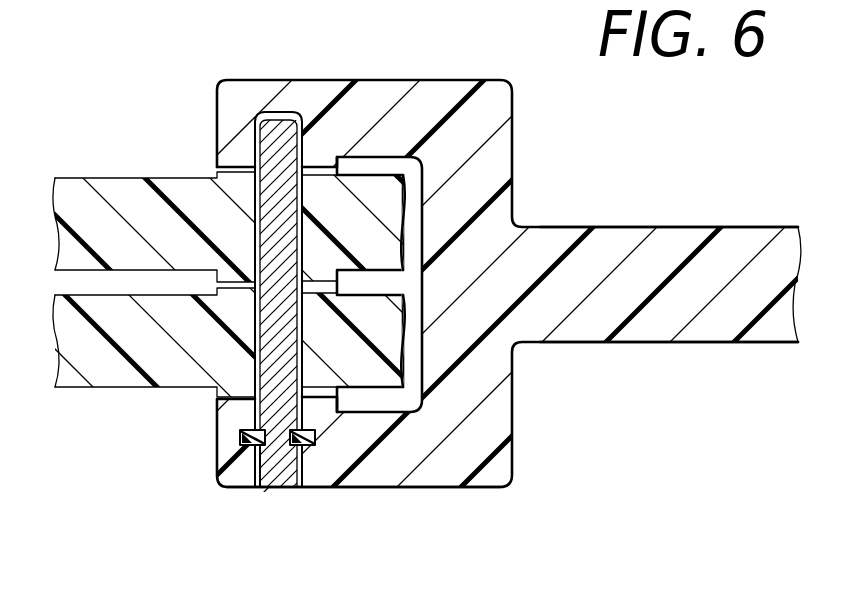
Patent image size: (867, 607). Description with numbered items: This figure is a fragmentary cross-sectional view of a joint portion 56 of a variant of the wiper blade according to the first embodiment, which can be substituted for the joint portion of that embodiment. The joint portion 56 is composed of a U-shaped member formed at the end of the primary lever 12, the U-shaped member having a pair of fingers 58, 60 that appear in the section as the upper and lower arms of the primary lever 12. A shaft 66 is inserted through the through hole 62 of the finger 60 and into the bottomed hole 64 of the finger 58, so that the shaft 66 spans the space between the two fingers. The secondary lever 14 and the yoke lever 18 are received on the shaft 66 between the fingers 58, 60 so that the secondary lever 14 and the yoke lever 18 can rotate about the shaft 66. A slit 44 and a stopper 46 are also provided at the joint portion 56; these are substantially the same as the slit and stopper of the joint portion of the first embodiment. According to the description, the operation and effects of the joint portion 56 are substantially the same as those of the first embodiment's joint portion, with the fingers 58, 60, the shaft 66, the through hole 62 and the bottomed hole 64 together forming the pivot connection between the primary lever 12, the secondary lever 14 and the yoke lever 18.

The primary lever 12 is at (683, 226).
The secondary lever 14 is at (105, 191).
The yoke lever 18 is at (97, 388).
The slit 44 is at (305, 447).
The stopper 46 is at (247, 440).
The joint portion 56 is at (298, 66).
The finger 58 is at (388, 90).
The finger 60 is at (397, 488).
The through hole 62 is at (258, 450).
The bottomed hole 64 is at (257, 143).
The shaft 66 is at (273, 370).